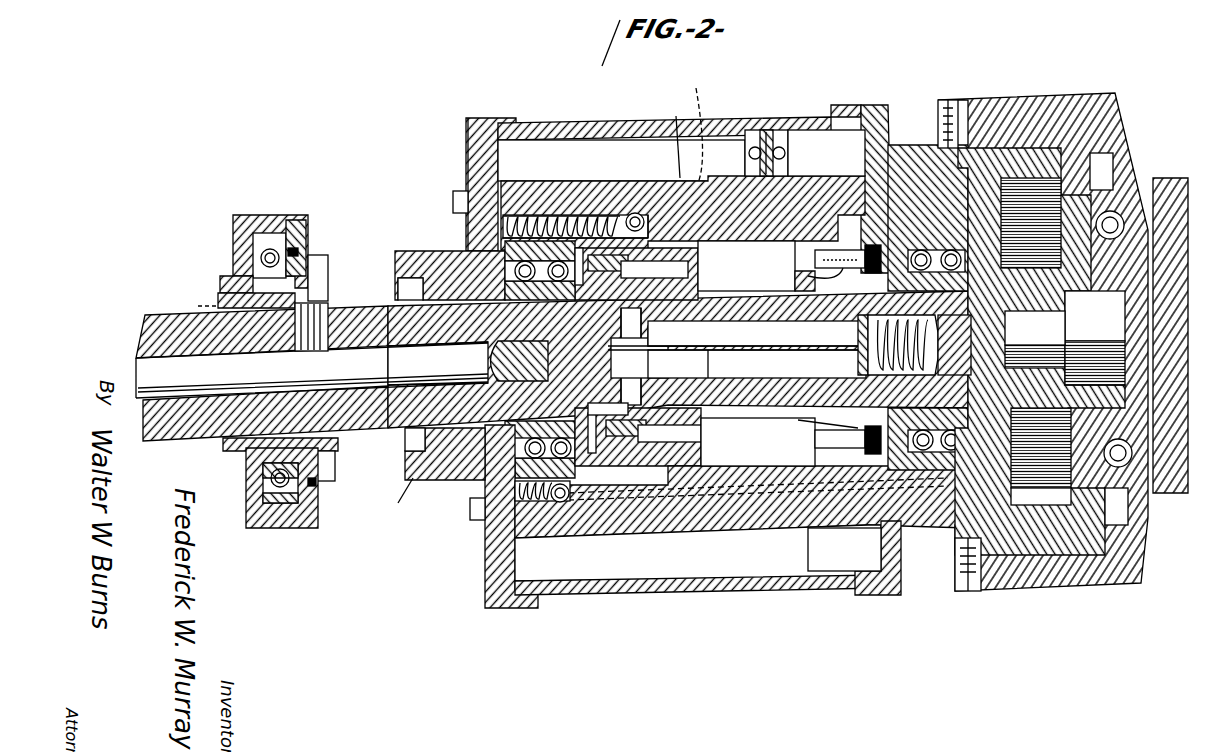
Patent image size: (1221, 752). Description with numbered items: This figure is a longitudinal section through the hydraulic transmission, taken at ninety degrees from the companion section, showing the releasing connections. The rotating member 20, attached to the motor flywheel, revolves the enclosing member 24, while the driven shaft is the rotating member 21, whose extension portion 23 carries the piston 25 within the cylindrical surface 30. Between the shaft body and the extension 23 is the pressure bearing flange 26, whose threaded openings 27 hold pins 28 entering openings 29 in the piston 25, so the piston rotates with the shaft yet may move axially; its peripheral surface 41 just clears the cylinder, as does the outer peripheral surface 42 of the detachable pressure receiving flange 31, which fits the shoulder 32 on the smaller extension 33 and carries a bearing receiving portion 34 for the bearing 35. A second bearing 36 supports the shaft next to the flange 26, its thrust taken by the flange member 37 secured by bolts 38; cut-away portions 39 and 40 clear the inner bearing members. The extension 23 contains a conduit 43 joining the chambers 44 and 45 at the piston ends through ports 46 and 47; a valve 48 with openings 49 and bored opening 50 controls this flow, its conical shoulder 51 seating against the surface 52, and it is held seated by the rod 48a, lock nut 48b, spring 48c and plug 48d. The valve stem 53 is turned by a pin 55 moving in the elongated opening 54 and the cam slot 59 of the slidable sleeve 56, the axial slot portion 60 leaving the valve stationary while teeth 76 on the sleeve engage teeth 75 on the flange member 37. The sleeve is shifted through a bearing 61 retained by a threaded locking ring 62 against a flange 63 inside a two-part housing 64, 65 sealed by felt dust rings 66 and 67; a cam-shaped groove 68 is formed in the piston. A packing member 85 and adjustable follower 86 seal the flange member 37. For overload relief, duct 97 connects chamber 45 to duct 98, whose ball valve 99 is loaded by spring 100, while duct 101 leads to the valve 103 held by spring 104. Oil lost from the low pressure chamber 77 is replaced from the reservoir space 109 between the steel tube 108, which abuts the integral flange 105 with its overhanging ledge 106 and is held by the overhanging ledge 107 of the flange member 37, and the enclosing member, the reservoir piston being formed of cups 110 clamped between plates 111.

The rotating member 20 is at (1180, 305).
The rotating member 21 is at (150, 310).
The extension portion 23 is at (757, 334).
The enclosing member 24 is at (695, 126).
The piston 25 is at (805, 232).
The pressure bearing portion 26 is at (679, 359).
The threaded openings 27 is at (582, 207).
The pins 28 is at (608, 215).
The openings 29 is at (640, 255).
The cylindrical surface 30 is at (666, 136).
The detachable pressure receiving flange 31 is at (806, 276).
The shoulder 32 is at (829, 442).
The smaller extension 33 is at (815, 423).
The bearing receiving portion 34 is at (983, 348).
The bearing 35 is at (930, 462).
The bearing member 36 is at (497, 248).
The flange member 37 is at (458, 135).
The bolts 38 is at (447, 192).
The cut away portion 39 is at (1035, 337).
The cut away portion 40 is at (450, 262).
The peripheral surface 41 is at (605, 500).
The outer peripheral surface 42 is at (845, 232).
The conduit 43 is at (743, 363).
The chamber 44 is at (625, 245).
The chamber 45 is at (827, 255).
The ports 46 is at (665, 315).
The ports 47 is at (833, 345).
The valve 48 is at (593, 406).
The rod 48a is at (738, 366).
The lock nut 48b is at (865, 345).
The spring 48c is at (1035, 328).
The plug 48d is at (990, 345).
The openings 49 is at (639, 356).
The bored opening 50 is at (757, 366).
The conical shoulder 51 is at (522, 361).
The coacting surface 52 is at (438, 363).
The valve stem 53 is at (145, 356).
The elongated opening 54 is at (320, 305).
The pin 55 is at (318, 270).
The slidable sleeve 56 is at (212, 288).
The cam slot 59 is at (292, 244).
The slot portion 60 is at (194, 305).
The bearing 61 is at (253, 228).
The threaded locking ring 62 is at (215, 268).
The flange 63 is at (312, 477).
The housing part 64 is at (228, 218).
The housing part 65 is at (283, 215).
The felt dust ring 66 is at (240, 462).
The felt dust ring 67 is at (308, 480).
The groove 68 is at (758, 442).
The teeth 75 is at (393, 495).
The teeth 76 is at (325, 455).
The low pressure chamber 77 is at (547, 207).
The packing member 85 is at (445, 469).
The adjustable follower 86 is at (395, 268).
The duct 97 is at (698, 560).
The duct 98 is at (510, 480).
The ball valve 99 is at (550, 495).
The spring 100 is at (480, 520).
The duct 101 is at (756, 265).
The valve 103 is at (626, 205).
The spring 104 is at (512, 205).
The integral flange 105 is at (868, 110).
The overhanging ledge 106 is at (832, 98).
The overhanging ledge 107 is at (485, 112).
The steel tube 108 is at (535, 115).
The space 109 is at (567, 140).
The cups 110 is at (740, 125).
The plates 111 is at (790, 125).